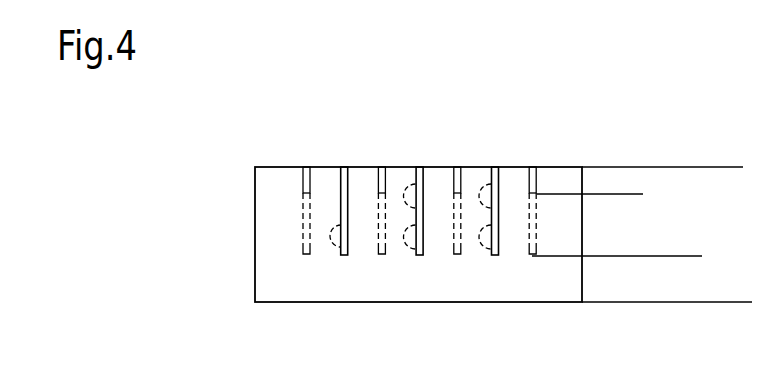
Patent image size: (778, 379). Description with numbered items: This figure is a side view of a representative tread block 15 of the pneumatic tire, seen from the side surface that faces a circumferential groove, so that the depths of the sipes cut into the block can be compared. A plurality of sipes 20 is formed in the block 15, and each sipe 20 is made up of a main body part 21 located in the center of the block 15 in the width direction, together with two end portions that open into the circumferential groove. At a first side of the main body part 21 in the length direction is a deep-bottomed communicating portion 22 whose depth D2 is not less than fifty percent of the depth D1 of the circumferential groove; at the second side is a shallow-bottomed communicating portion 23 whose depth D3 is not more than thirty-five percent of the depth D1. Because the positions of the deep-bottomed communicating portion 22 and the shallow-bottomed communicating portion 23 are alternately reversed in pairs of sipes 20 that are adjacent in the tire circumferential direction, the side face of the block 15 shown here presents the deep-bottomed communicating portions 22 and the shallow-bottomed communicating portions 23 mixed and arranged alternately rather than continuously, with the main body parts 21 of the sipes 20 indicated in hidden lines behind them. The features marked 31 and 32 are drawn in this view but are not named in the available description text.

The block 15 is at (557, 177).
The sipe 20 is at (342, 250).
The main body part 21 is at (303, 222).
The deep-bottomed communicating portion 22 is at (348, 173).
The shallow-bottomed communicating portion 23 is at (302, 170).
The recess at deep groove 31 is at (348, 195).
The hidden recess 32 is at (342, 208).
The depth of the circumferential groove D1 is at (740, 167).
The depth of the deep-bottomed communicating portion D2 is at (687, 167).
The depth of the shallow-bottomed communicating portion D3 is at (629, 167).